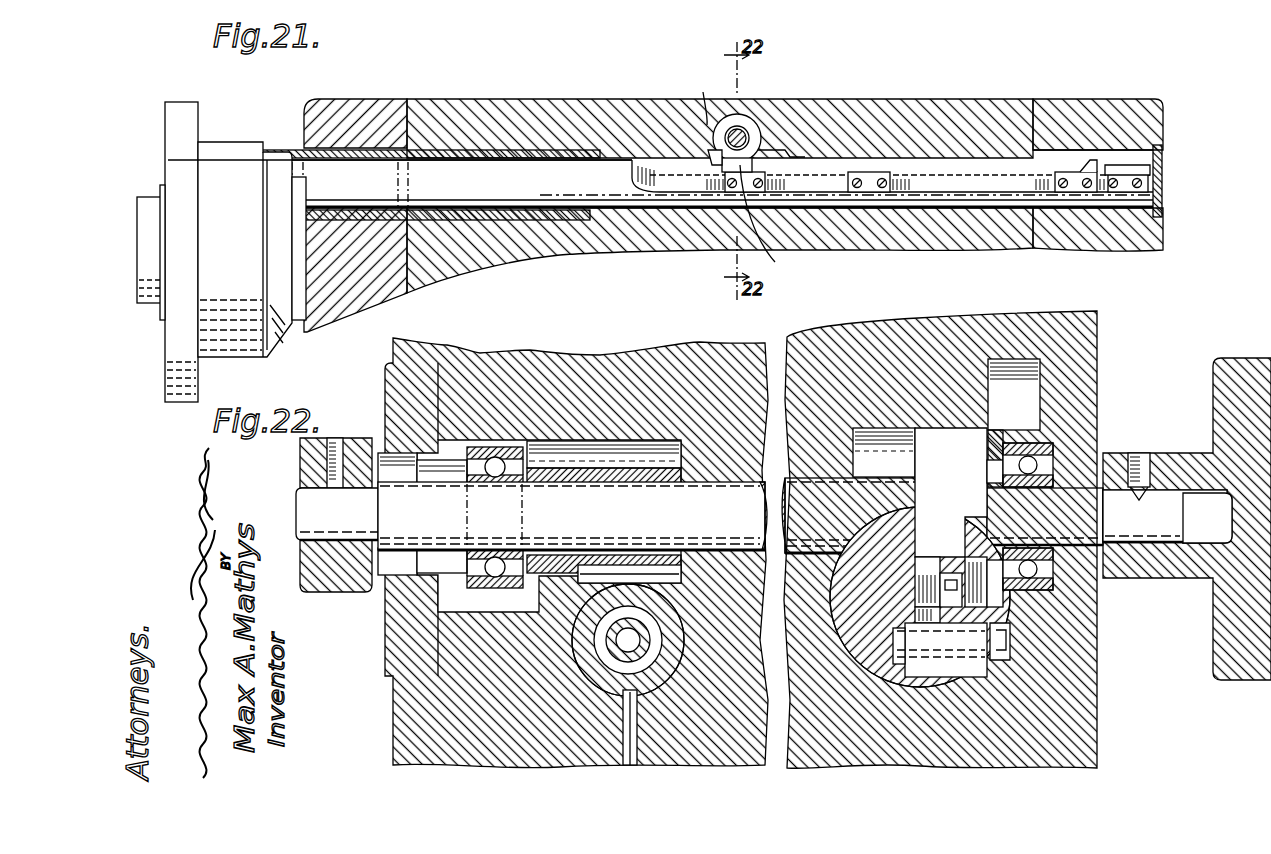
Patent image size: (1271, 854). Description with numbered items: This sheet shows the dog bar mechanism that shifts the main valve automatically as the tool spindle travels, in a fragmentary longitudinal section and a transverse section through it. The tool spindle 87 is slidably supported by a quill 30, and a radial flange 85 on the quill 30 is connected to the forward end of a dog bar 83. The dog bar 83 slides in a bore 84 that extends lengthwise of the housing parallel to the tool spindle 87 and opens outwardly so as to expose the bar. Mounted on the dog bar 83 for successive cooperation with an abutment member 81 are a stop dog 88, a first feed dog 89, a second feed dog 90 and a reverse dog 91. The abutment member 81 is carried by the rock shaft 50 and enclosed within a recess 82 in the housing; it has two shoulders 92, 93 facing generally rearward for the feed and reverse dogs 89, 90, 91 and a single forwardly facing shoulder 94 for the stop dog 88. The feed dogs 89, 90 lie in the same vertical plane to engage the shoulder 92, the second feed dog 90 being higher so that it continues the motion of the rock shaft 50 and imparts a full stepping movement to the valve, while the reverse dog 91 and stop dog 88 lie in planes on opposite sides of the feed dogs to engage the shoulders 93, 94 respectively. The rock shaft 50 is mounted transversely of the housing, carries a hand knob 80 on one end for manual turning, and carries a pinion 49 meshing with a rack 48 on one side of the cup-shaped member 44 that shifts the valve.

In FIG. 21, the quill 30 is at (297, 282).
In FIG. 22, the cup-shaped member 44 is at (662, 625).
In FIG. 22, the rack 48 is at (655, 582).
In FIG. 22, the pinion 49 is at (670, 466).
In FIG. 21, the rock shaft 50 is at (698, 96).
In FIG. 22, the rock shaft 50 is at (718, 490).
In FIG. 22, the hand knob 80 is at (1223, 418).
In FIG. 21, the abutment member 81 is at (748, 125).
In FIG. 22, the abutment member 81 is at (950, 428).
In FIG. 22, the recess 82 is at (890, 428).
In FIG. 21, the dog bar 83 is at (563, 170).
In FIG. 22, the dog bar 83 is at (975, 705).
In FIG. 21, the bore 84 is at (523, 210).
In FIG. 22, the bore 84 is at (915, 688).
In FIG. 21, the radial flange 85 is at (178, 357).
In FIG. 21, the tool spindle 87 is at (155, 205).
In FIG. 21, the stop dog 88 is at (718, 158).
In FIG. 22, the stop dog 88 is at (990, 590).
In FIG. 21, the first feed dog 89 is at (876, 182).
In FIG. 22, the first feed dog 89 is at (952, 607).
In FIG. 21, the second feed dog 90 is at (1090, 162).
In FIG. 22, the second feed dog 90 is at (950, 575).
In FIG. 21, the reverse dog 91 is at (1162, 168).
In FIG. 22, the reverse dog 91 is at (917, 601).
In FIG. 21, the shoulder 92 is at (722, 142).
In FIG. 22, the shoulder 92 is at (940, 565).
In FIG. 21, the shoulder 93 is at (768, 220).
In FIG. 22, the shoulder 93 is at (916, 555).
In FIG. 21, the forwardly facing shoulder 94 is at (787, 163).
In FIG. 22, the forwardly facing shoulder 94 is at (1010, 545).